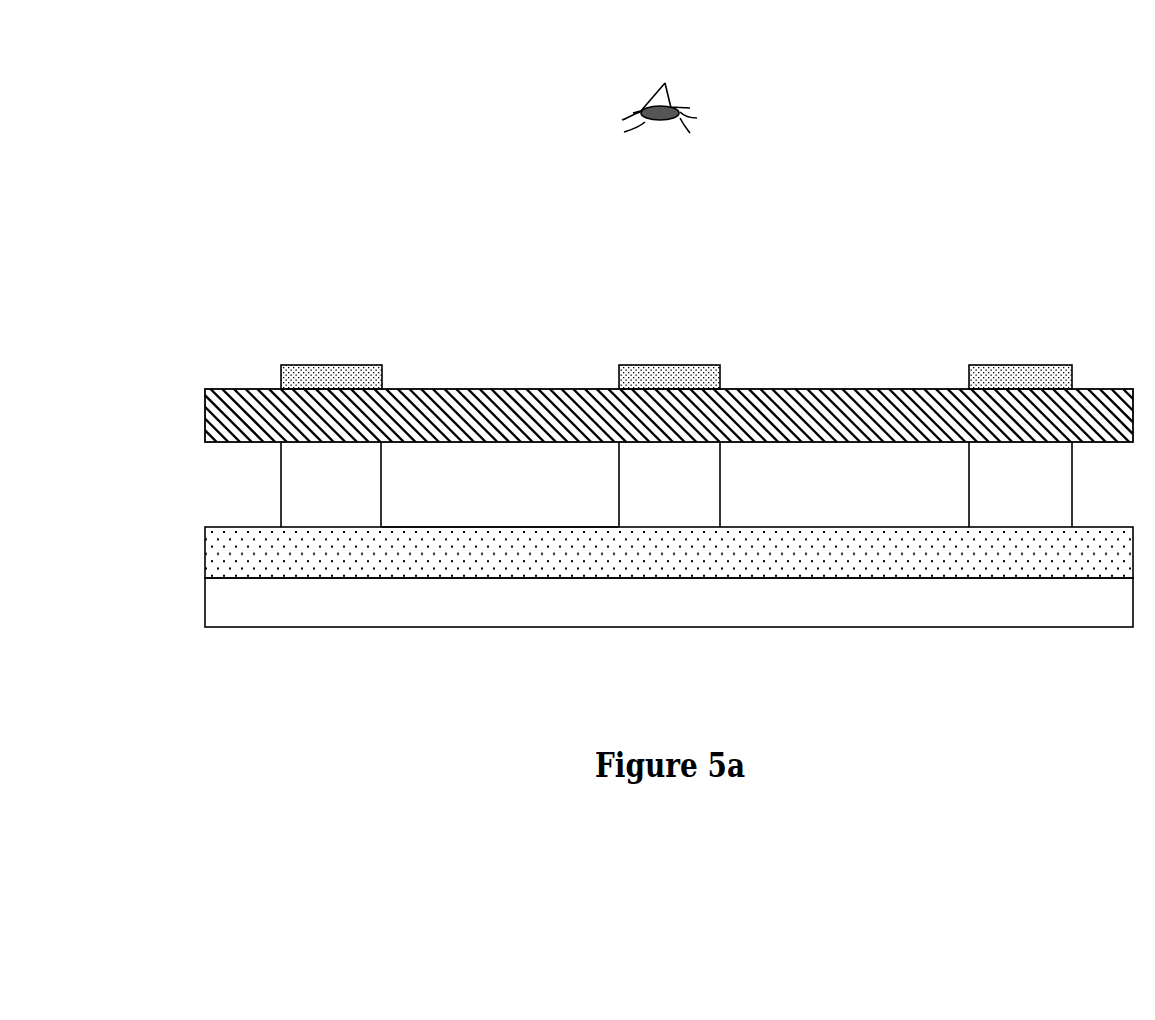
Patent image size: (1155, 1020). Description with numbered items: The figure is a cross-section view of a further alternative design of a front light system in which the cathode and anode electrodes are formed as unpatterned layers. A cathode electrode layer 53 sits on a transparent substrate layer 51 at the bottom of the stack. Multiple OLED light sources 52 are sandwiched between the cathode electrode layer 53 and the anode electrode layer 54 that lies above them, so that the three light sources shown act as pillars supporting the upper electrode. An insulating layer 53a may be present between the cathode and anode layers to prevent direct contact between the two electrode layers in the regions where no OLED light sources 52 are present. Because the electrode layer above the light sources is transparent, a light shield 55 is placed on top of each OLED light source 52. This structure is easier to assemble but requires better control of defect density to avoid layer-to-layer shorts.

The transparent substrate layer 51 is at (1058, 603).
The OLED light source 52 is at (332, 475).
The cathode electrode layer 53 is at (178, 552).
The insulating layer 53a is at (467, 497).
The anode electrode layer 54 is at (178, 414).
The light shield 55 is at (307, 375).